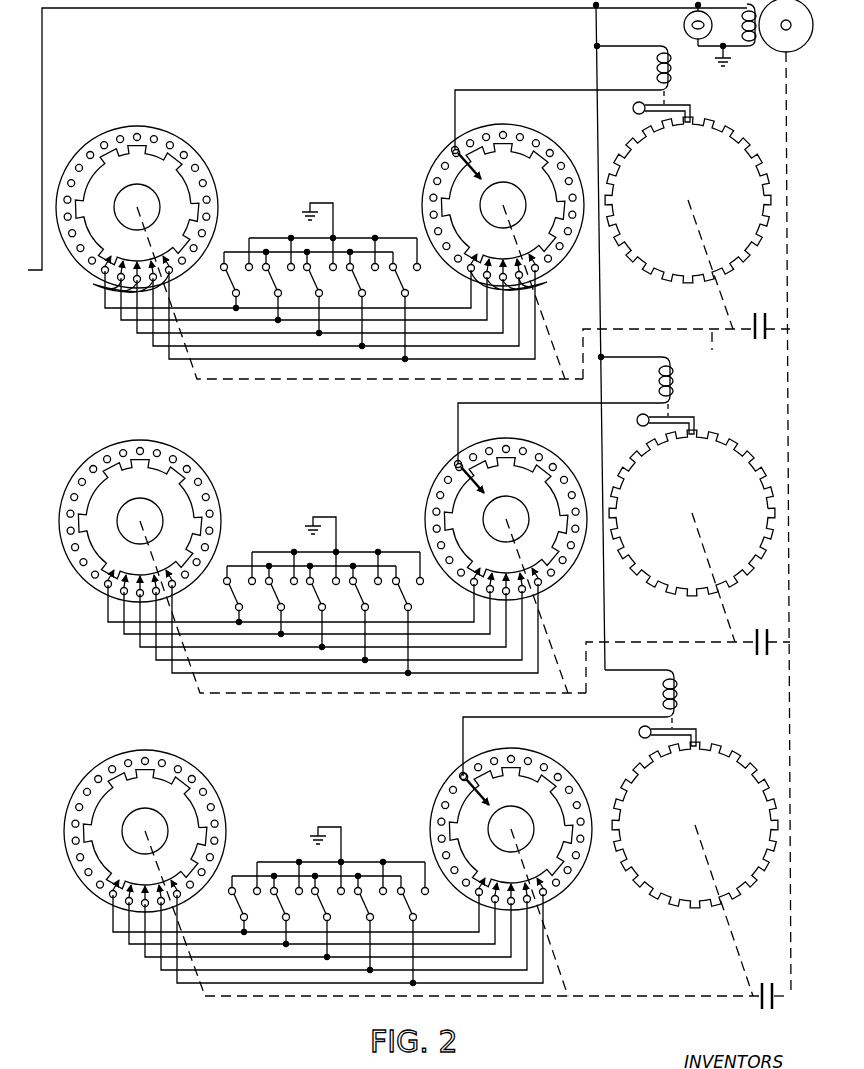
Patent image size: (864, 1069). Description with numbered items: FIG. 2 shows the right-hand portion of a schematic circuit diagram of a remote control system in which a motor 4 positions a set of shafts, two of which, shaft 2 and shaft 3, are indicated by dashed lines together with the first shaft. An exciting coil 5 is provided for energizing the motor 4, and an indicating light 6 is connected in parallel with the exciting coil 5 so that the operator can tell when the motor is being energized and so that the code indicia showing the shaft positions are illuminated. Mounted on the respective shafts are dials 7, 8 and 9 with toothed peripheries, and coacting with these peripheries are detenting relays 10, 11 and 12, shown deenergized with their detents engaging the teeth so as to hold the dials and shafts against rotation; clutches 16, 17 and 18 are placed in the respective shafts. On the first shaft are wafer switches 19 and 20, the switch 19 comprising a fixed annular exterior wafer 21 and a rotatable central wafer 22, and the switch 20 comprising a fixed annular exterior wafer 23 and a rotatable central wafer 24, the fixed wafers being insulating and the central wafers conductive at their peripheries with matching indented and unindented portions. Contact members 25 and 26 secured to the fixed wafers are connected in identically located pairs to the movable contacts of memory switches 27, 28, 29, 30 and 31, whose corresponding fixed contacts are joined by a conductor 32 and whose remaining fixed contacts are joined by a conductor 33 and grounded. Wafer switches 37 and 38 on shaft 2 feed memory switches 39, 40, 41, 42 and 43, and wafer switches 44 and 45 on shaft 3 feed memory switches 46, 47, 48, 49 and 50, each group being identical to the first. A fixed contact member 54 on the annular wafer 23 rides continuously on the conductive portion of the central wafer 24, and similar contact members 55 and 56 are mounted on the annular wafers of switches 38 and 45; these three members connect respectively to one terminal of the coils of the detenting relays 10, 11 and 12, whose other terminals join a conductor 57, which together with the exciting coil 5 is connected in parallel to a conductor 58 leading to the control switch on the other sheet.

The shaft 2 is at (710, 643).
The shaft 3 is at (656, 997).
The motor 4 is at (793, 48).
The exciting coil 5 is at (748, 47).
The indicating light 6 is at (684, 25).
The dial 7 is at (723, 203).
The dial 8 is at (725, 521).
The dial 9 is at (727, 833).
The detenting relay 10 is at (672, 70).
The detenting relay 11 is at (678, 382).
The detenting relay 12 is at (684, 694).
The clutch 16 is at (760, 342).
The clutch 17 is at (762, 657).
The clutch 18 is at (769, 1007).
The wafer switch 19 is at (147, 205).
The wafer switch 20 is at (508, 198).
The fixed annular exterior wafer 21 is at (147, 207).
The rotatable central wafer 22 is at (136, 205).
The fixed annular exterior wafer 23 is at (508, 205).
The rotatable central wafer 24 is at (503, 203).
The contact member 25 is at (116, 286).
The contact member 26 is at (527, 282).
The memory switch 27 is at (238, 283).
The memory switch 28 is at (281, 283).
The memory switch 29 is at (323, 283).
The memory switch 30 is at (366, 283).
The memory switch 31 is at (409, 283).
The conductor 32 is at (232, 252).
The conductor 33 is at (354, 238).
The wafer switch 37 is at (140, 514).
The wafer switch 38 is at (506, 509).
The memory switch 39 is at (246, 601).
The memory switch 40 is at (289, 607).
The memory switch 41 is at (330, 614).
The memory switch 42 is at (373, 620).
The memory switch 43 is at (416, 627).
The wafer switch 44 is at (145, 825).
The wafer switch 45 is at (511, 821).
The memory switch 46 is at (251, 911).
The memory switch 47 is at (294, 917).
The memory switch 48 is at (335, 924).
The memory switch 49 is at (378, 930).
The memory switch 50 is at (421, 937).
The fixed contact member 54 is at (467, 174).
The contact member 55 is at (470, 488).
The contact member 56 is at (475, 800).
The conductor 57 is at (602, 303).
The conductor 58 is at (325, 7).